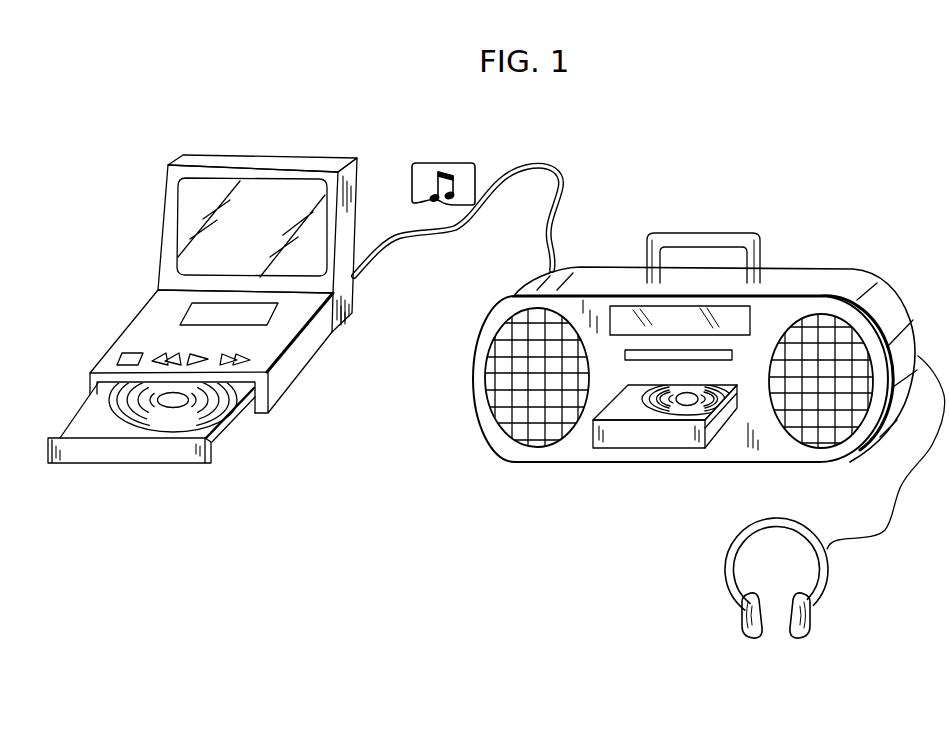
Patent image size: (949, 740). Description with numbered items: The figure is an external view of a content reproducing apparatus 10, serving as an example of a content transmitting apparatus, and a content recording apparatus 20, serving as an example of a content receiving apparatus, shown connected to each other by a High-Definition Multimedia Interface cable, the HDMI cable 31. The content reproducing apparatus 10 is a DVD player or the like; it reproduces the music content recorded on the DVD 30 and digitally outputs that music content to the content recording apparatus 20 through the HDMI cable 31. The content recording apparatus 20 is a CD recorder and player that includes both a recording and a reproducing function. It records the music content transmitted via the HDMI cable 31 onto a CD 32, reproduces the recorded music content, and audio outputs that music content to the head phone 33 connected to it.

The content reproducing apparatus 10 is at (308, 156).
The content recording apparatus 20 is at (818, 268).
The DVD 30 is at (187, 415).
The HDMI cable 31 is at (447, 238).
The CD 32 is at (680, 408).
The head phone 33 is at (725, 565).